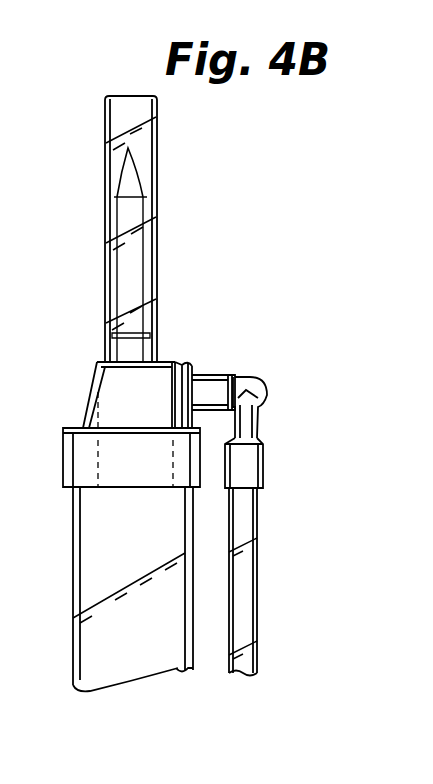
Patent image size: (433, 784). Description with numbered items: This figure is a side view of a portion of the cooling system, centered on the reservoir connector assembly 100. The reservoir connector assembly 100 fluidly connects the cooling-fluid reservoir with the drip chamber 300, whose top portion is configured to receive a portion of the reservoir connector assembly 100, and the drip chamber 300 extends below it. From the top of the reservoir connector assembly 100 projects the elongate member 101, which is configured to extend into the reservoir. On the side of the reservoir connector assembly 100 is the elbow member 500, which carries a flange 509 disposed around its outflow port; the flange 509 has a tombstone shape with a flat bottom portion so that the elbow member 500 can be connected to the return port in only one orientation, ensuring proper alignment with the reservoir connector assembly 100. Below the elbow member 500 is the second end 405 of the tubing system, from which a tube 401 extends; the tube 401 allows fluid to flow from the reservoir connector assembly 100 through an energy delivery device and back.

The reservoir connector assembly 100 is at (57, 390).
The elongate member 101 is at (120, 282).
The drip chamber 300 is at (85, 572).
The flange 509 is at (197, 372).
The elbow member 500 is at (258, 375).
The second end 405 is at (265, 490).
The tube 401 is at (258, 583).